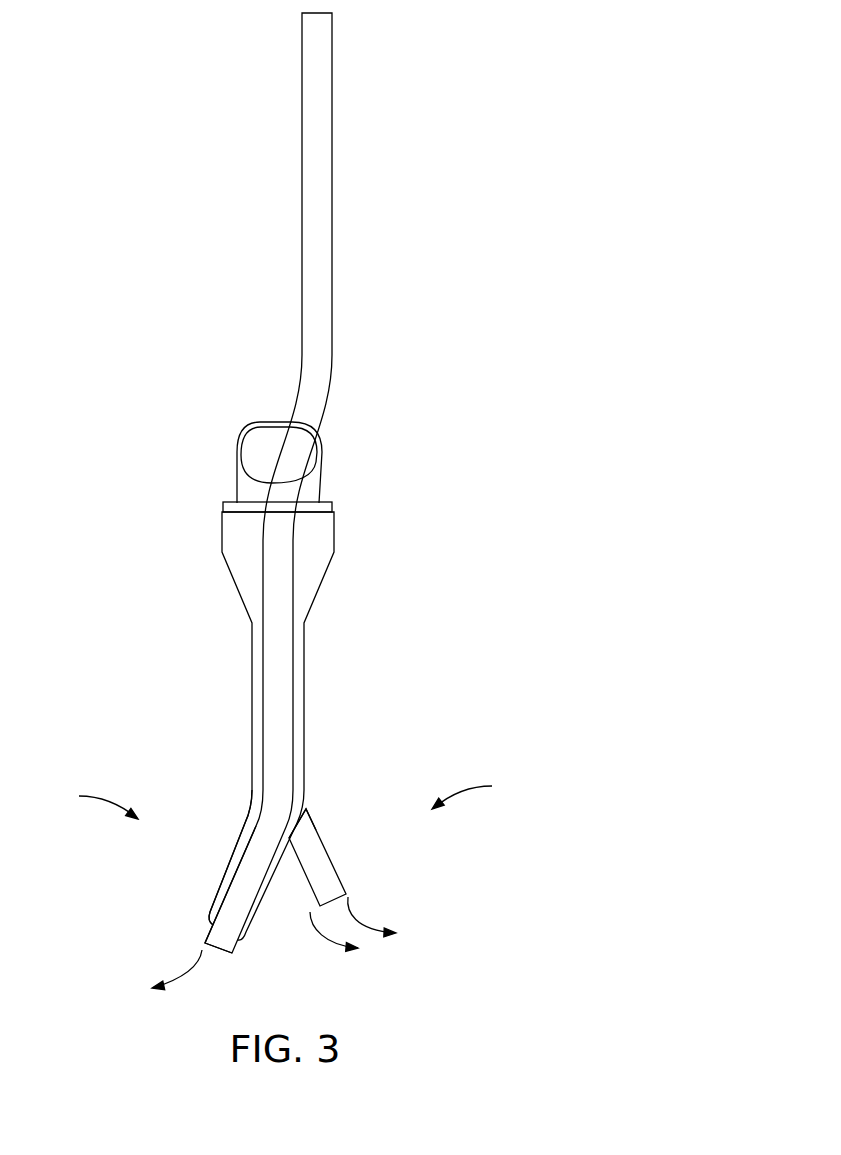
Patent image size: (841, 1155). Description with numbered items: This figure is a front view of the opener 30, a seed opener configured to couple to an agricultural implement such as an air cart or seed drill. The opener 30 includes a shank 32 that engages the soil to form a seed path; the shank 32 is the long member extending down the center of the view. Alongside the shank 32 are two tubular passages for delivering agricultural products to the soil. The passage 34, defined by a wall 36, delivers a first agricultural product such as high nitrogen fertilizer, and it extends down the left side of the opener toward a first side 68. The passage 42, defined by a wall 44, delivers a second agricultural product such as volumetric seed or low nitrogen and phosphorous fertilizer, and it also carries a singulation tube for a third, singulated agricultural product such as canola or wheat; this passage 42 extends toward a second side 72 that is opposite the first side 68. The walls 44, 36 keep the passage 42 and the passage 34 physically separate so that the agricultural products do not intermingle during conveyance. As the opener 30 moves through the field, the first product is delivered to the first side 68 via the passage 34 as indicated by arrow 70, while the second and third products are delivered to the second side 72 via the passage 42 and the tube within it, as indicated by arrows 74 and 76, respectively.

The opener 30 is at (392, 41).
The shank 32 is at (333, 189).
The passage 34 is at (210, 873).
The wall 36 is at (240, 829).
The passage 42 is at (358, 861).
The wall 44 is at (309, 828).
The first side 68 is at (92, 801).
The arrow 70 is at (188, 976).
The second side 72 is at (477, 790).
The arrow 74 is at (320, 938).
The arrow 76 is at (363, 921).